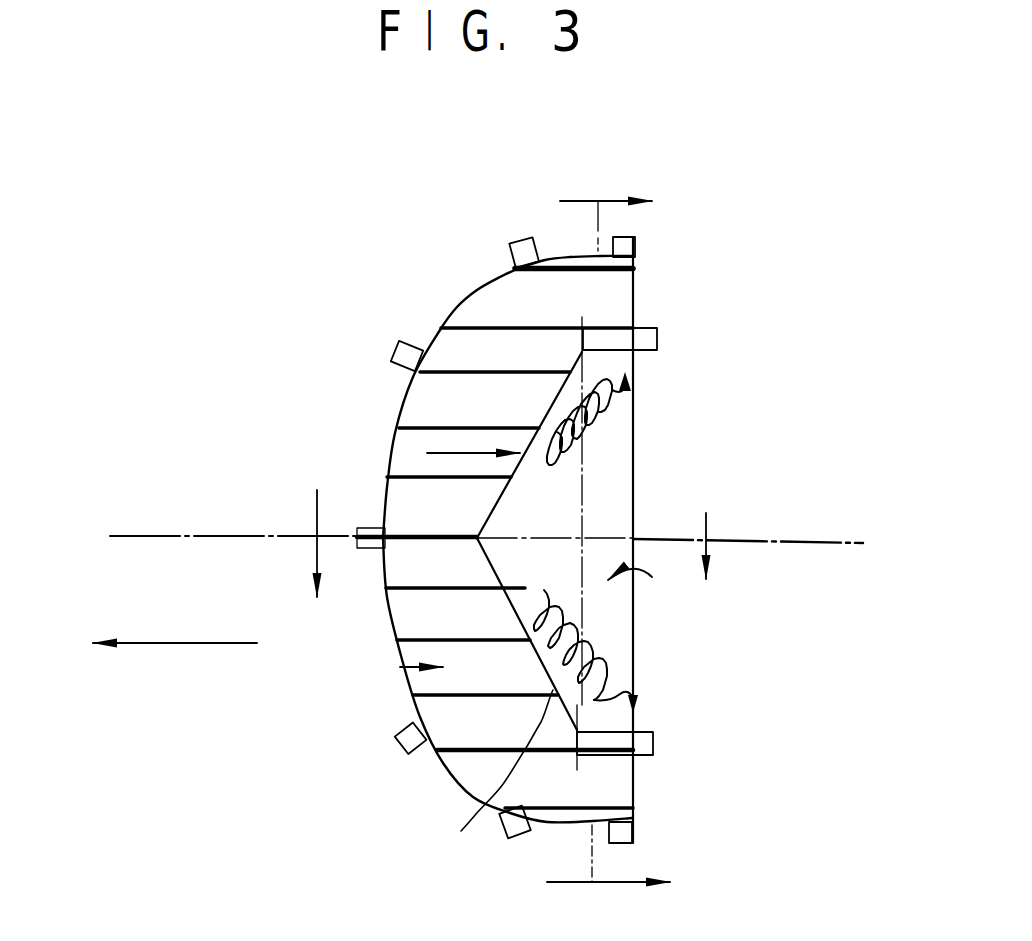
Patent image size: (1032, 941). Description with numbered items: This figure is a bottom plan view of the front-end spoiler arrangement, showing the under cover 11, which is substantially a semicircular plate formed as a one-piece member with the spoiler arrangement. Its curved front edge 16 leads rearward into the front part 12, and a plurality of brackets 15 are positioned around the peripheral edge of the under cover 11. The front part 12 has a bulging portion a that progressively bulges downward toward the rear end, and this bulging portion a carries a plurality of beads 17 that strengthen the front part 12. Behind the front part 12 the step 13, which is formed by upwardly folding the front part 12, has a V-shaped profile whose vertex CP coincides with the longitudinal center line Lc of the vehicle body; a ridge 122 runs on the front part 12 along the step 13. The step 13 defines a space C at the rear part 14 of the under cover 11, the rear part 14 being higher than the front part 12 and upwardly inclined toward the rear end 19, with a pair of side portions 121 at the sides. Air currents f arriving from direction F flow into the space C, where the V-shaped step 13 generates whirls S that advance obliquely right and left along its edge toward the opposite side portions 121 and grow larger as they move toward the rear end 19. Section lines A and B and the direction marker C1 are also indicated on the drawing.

The under cover 11 is at (478, 509).
The front part 12 is at (398, 447).
The step 13 is at (544, 650).
The rear part 14 is at (627, 657).
The brackets 15 is at (650, 339).
The curved front edge 16 is at (388, 617).
The beads 17 is at (487, 327).
The rear end 19 is at (632, 775).
The side portions 121 is at (618, 292).
The ridge 122 is at (485, 780).
The whirls S is at (584, 509).
The vertex CP is at (495, 545).
The space C is at (644, 589).
The rotation direction C1 is at (633, 713).
The air currents f is at (462, 451).
The direction F is at (187, 643).
The bulging portion a is at (397, 670).
The section line A is at (312, 550).
The section line B is at (612, 200).
The longitudinal center line Lc is at (200, 535).